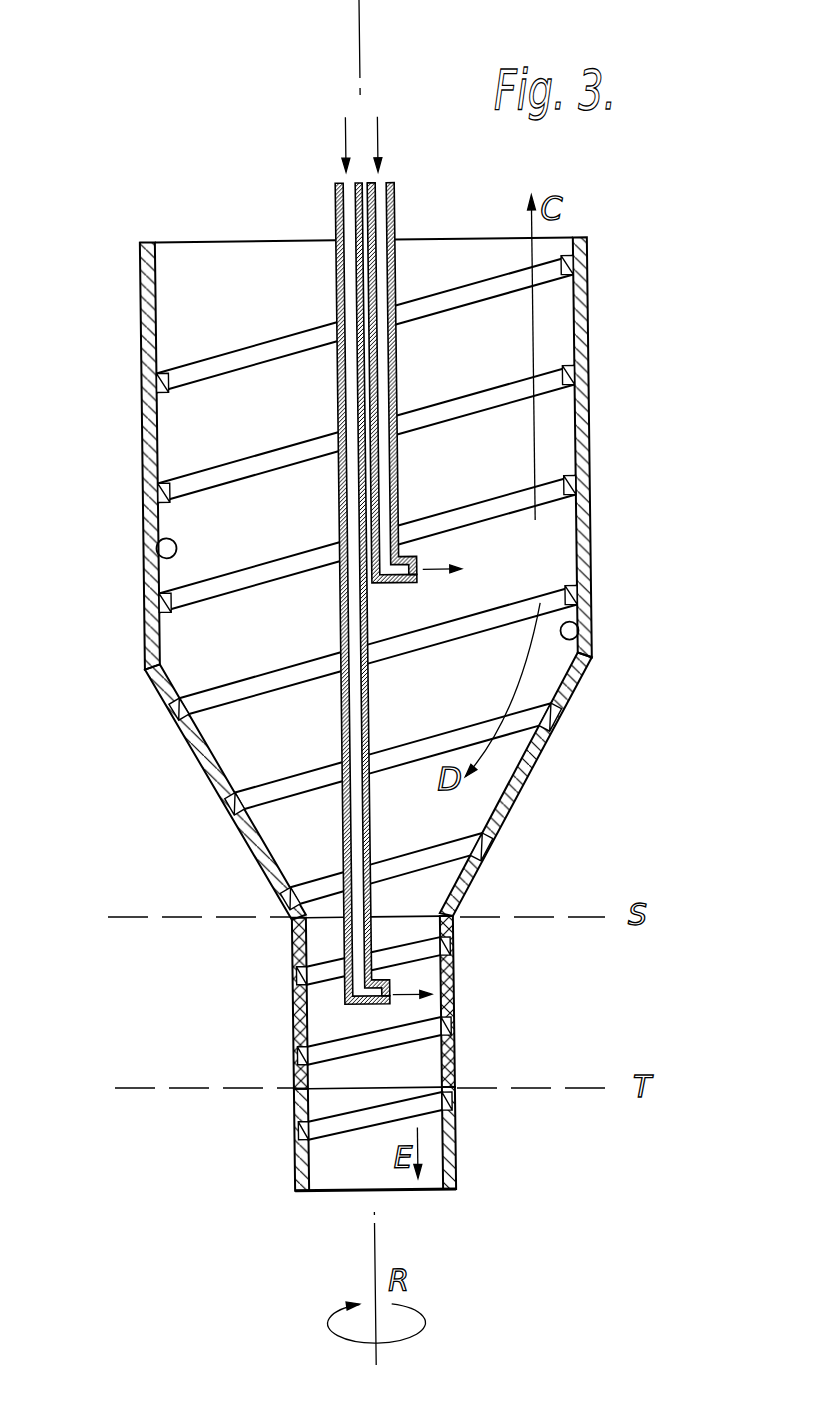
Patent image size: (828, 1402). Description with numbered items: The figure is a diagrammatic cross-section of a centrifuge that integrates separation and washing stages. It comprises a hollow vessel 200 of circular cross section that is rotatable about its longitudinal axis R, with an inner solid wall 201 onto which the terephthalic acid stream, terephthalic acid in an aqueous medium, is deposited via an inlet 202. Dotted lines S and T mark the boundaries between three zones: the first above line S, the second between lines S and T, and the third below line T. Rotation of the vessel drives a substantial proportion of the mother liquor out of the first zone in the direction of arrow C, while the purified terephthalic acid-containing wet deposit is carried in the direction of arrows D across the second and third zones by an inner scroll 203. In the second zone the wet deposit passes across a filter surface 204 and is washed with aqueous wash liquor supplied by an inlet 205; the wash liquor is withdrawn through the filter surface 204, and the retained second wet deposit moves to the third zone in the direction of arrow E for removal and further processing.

The hollow vessel 200 is at (585, 423).
The inner solid wall 201 is at (141, 552).
The inlet 202 is at (390, 207).
The inner scroll 203 is at (195, 376).
The filter surface 204 is at (326, 1022).
The inlet 205 is at (331, 205).